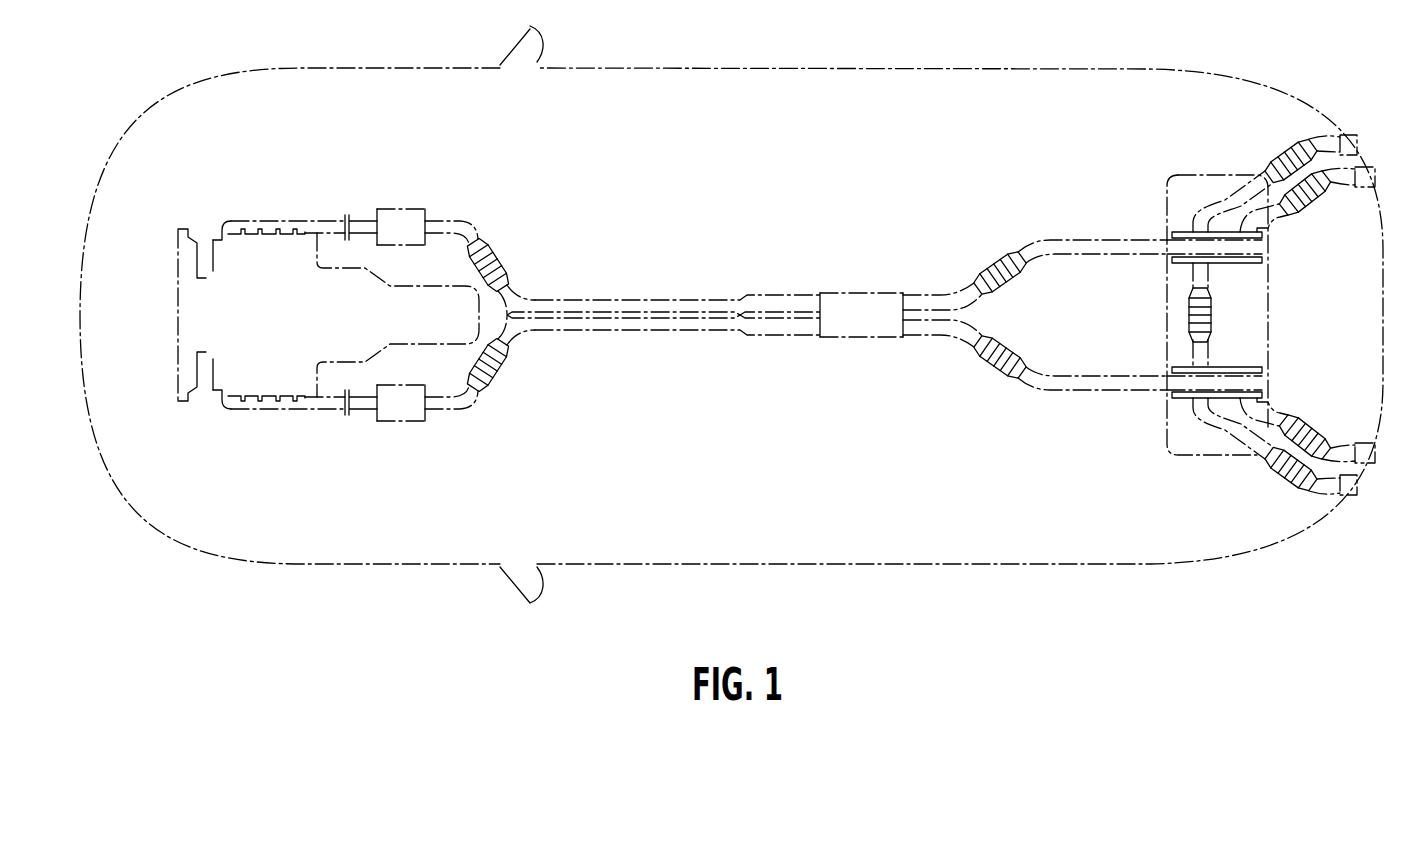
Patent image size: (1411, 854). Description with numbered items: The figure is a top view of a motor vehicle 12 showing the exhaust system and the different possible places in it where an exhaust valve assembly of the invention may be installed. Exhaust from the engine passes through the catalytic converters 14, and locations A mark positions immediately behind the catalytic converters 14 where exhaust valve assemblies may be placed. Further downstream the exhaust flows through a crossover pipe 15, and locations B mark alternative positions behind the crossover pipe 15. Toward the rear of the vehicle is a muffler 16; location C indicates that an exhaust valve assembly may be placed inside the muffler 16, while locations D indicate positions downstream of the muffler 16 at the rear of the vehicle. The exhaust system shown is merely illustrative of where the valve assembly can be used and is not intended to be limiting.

The motor vehicle 12 is at (1178, 67).
The catalytic converters 14 is at (400, 209).
The crossover pipe 15 is at (873, 293).
The muffler 16 is at (1193, 175).
The locations A is at (499, 260).
The locations B is at (987, 270).
The location C is at (1186, 310).
The locations D is at (1280, 165).